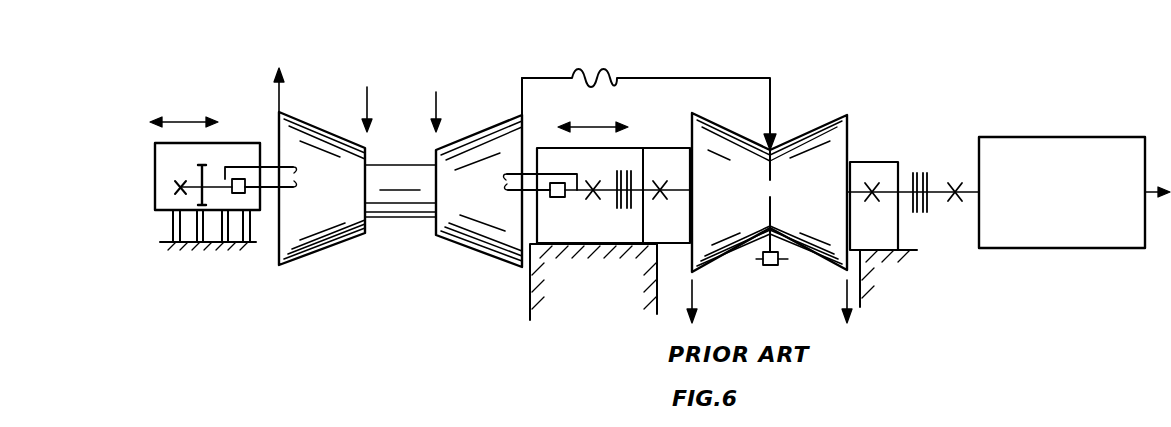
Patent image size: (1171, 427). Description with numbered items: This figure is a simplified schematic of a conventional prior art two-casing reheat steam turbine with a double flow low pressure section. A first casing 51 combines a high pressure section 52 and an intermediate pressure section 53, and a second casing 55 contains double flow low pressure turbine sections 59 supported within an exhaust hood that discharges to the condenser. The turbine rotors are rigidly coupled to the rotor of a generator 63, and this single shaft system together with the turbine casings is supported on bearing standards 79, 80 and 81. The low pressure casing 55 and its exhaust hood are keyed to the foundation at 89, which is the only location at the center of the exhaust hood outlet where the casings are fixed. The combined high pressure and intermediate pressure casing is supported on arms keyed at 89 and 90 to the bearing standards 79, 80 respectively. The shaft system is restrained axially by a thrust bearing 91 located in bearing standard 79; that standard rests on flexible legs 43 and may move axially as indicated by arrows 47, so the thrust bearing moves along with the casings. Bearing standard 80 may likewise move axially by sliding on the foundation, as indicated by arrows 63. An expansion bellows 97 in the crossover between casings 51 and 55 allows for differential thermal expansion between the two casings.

The flexible legs 43 is at (170, 224).
The arrows 47 is at (180, 122).
The first casing 51 is at (408, 88).
The high pressure section 52 is at (328, 246).
The intermediate pressure section 53 is at (464, 247).
The second casing 55 is at (792, 110).
The double flow low pressure turbine sections 59 is at (812, 247).
The generator 63 is at (583, 127).
The bearing standard 79 is at (217, 142).
The bearing standard 80 is at (644, 147).
The bearing standard 81 is at (878, 161).
The key 89 is at (237, 178).
The key 90 is at (562, 197).
The thrust bearing 91 is at (200, 173).
The expansion bellows 97 is at (590, 70).